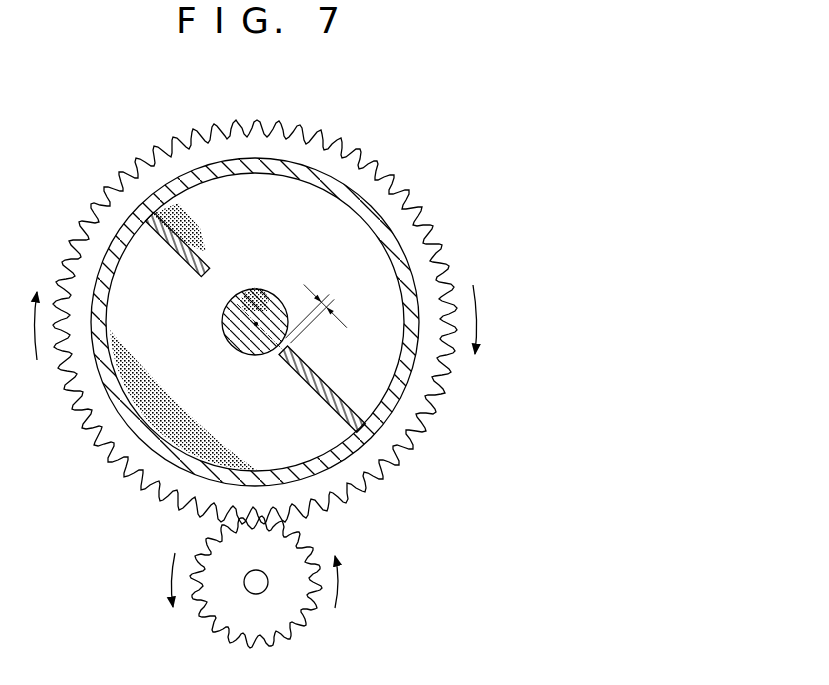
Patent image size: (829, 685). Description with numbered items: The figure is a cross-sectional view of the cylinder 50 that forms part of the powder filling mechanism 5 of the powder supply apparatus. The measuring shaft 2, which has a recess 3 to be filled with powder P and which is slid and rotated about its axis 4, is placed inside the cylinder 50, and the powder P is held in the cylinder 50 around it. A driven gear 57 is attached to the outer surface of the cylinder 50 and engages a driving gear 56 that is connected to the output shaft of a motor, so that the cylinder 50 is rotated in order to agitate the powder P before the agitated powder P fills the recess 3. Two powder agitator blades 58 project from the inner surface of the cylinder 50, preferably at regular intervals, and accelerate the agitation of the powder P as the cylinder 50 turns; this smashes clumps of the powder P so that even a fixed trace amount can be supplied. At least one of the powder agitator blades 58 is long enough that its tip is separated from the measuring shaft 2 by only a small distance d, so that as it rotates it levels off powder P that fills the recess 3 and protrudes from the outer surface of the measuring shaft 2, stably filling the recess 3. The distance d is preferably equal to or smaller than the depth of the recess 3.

The powder filling mechanism 5 is at (521, 142).
The driven gear 57 is at (413, 408).
The cylinder 50 is at (360, 210).
The powder agitator blades 58 is at (168, 249).
The measuring shaft 2 is at (210, 325).
The recess 3 is at (248, 284).
The axis 4 is at (259, 328).
The driving gear 56 is at (293, 620).
The powder P is at (182, 227).
The distance d is at (316, 312).